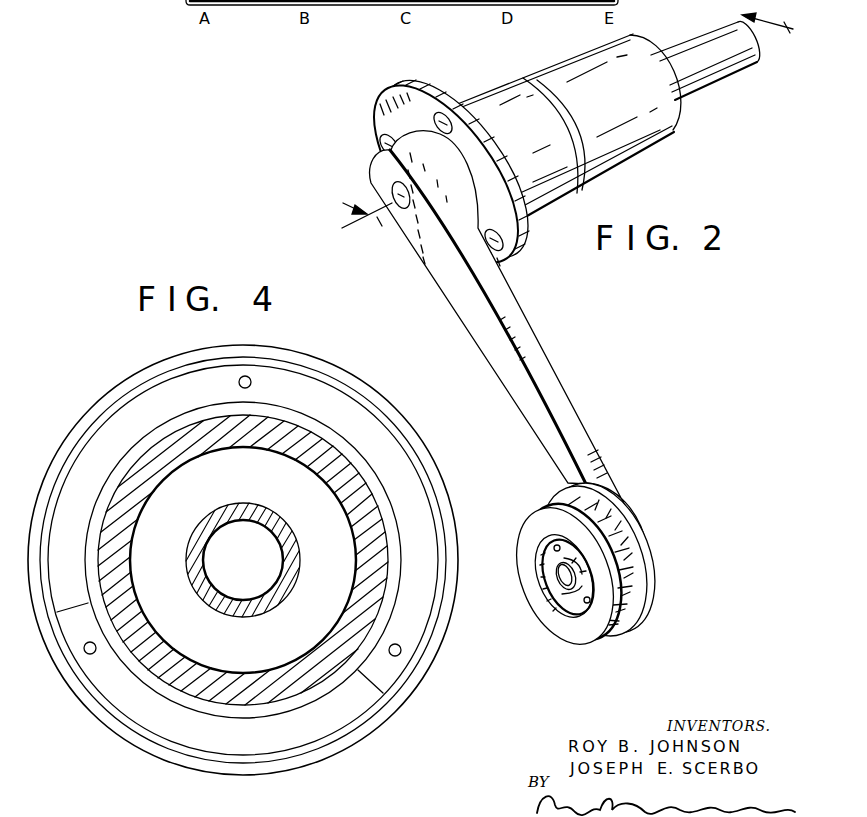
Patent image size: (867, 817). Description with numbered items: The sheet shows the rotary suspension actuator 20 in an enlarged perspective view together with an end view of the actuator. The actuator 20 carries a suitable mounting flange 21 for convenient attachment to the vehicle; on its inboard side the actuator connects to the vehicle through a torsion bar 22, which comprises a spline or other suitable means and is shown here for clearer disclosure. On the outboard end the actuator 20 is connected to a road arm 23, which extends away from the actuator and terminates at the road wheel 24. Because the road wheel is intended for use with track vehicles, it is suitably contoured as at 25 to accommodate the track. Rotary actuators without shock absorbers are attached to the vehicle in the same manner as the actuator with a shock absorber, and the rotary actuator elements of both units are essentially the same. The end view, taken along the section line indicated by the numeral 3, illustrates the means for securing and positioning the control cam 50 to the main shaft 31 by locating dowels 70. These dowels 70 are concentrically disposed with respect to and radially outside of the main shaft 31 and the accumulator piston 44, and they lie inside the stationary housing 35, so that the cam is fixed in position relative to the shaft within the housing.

In FIG. 2, the rotary suspension actuator 20 is at (660, 118).
In FIG. 2, the mounting flange 21 is at (398, 98).
In FIG. 2, the torsion bar 22 is at (706, 63).
In FIG. 2, the road arm 23 is at (505, 302).
In FIG. 2, the road wheel 24 is at (567, 623).
In FIG. 2, the contoured portion of road wheel 25 is at (633, 575).
In FIG. 2, the section line 3- 3 is at (561, 114).
In FIG. 4, the main shaft 31 is at (243, 448).
In FIG. 4, the stationary housing 35 is at (158, 366).
In FIG. 4, the accumulator piston 44 is at (267, 518).
In FIG. 4, the control cam 50 is at (86, 466).
In FIG. 4, the locating dowels 70 is at (239, 382).